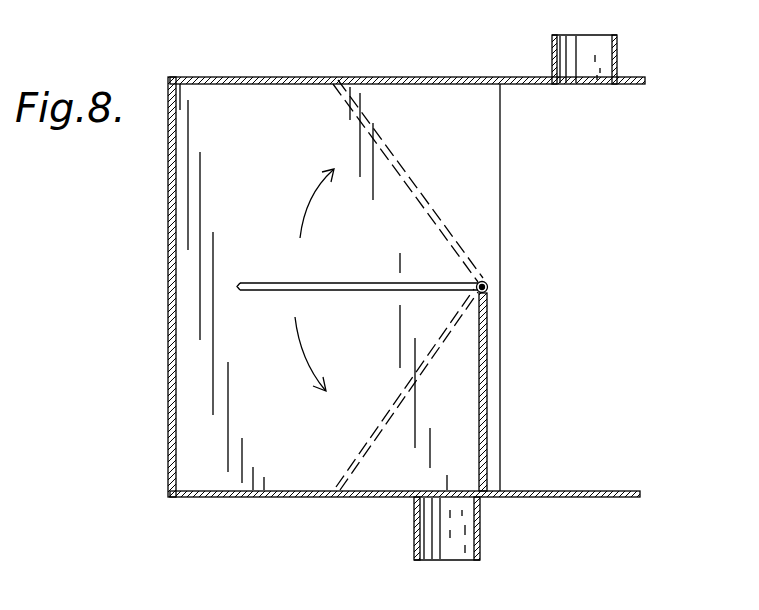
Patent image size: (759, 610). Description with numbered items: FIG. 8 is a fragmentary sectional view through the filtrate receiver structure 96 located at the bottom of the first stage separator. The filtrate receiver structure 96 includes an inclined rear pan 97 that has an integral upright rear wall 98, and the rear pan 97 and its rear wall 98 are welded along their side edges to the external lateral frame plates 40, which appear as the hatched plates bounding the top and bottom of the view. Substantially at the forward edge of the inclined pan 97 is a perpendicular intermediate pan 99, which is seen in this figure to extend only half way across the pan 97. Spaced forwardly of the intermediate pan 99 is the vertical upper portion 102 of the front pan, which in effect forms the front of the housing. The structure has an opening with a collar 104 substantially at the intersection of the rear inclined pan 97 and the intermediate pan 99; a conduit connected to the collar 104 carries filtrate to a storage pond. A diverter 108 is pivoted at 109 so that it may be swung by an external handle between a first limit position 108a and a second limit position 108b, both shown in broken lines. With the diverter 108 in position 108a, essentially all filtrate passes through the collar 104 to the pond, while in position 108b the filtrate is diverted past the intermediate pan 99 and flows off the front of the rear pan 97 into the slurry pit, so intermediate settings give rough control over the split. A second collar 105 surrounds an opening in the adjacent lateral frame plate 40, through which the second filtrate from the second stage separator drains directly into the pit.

The filtrate receiver structure 96 is at (260, 47).
The external lateral frame plates 40 is at (293, 76).
The upright rear wall 98 is at (168, 340).
The inclined rear pan 97 is at (265, 386).
The vertical upper portion 102 is at (600, 232).
The perpendicular intermediate pan 99 is at (487, 378).
The pivot 109 is at (488, 287).
The diverter 108 is at (366, 282).
The first limit position 108a is at (402, 163).
The second limit position 108b is at (375, 443).
The collar 105 is at (617, 46).
The collar 104 is at (485, 534).